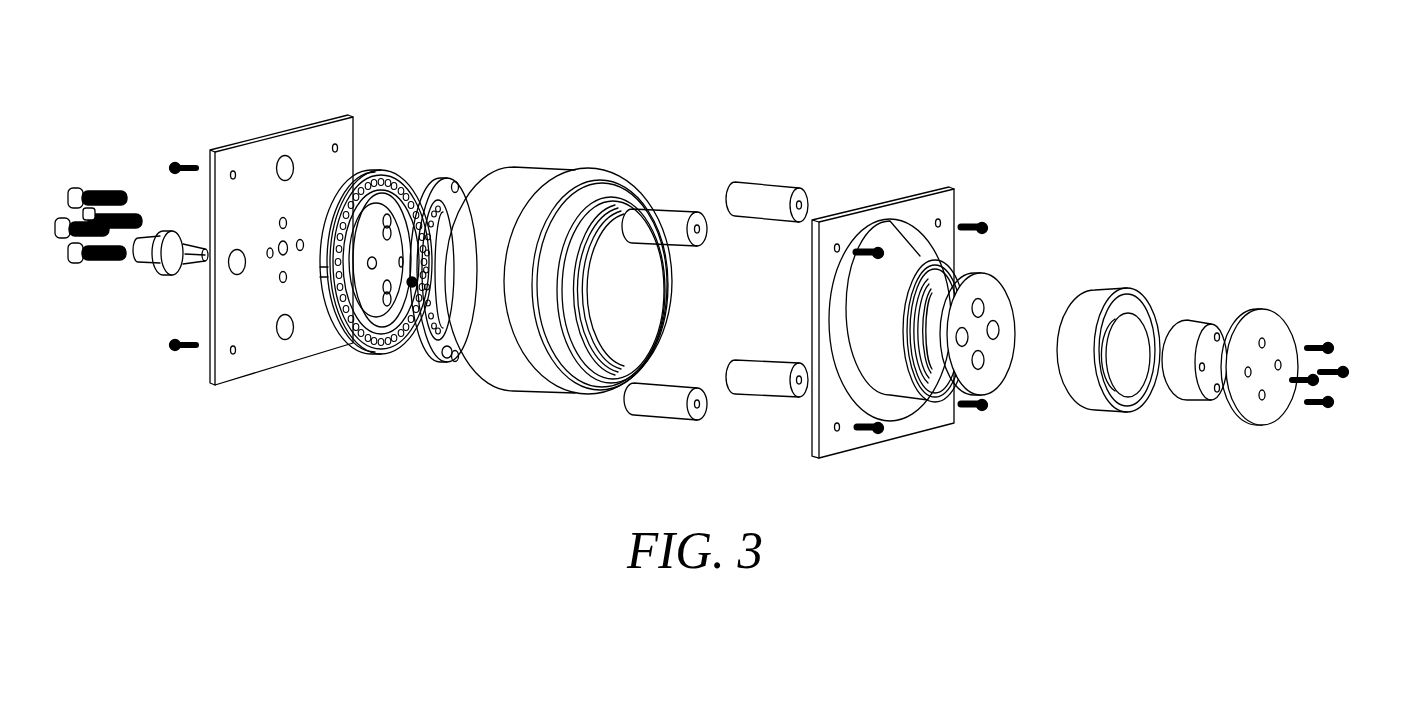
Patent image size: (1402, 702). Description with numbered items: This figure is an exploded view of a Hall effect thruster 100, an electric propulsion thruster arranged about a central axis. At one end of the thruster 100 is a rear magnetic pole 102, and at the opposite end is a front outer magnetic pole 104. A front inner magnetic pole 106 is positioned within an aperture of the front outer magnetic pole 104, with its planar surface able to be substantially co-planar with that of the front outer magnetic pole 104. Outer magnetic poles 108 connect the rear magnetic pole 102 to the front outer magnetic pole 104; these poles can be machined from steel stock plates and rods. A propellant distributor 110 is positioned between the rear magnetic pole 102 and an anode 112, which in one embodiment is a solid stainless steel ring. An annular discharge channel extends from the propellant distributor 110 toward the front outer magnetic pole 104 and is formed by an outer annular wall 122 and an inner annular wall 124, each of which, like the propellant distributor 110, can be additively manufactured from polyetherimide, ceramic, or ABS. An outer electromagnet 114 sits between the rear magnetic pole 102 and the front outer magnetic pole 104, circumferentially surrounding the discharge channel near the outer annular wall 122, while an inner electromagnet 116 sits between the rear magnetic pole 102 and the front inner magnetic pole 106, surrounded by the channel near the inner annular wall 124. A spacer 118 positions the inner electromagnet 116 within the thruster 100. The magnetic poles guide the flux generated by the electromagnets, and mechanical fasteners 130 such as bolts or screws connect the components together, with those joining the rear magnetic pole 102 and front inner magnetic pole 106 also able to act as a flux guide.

The Hall effect thruster 100 is at (1008, 106).
The rear magnetic pole 102 is at (280, 132).
The front outer magnetic pole 104 is at (951, 191).
The front inner magnetic pole 106 is at (1270, 313).
The outer magnetic poles 108 is at (655, 217).
The propellant distributor 110 is at (388, 172).
The anode 112 is at (460, 180).
The outer electromagnet 114 is at (554, 270).
The inner electromagnet 116 is at (1132, 310).
The spacer 118 is at (997, 304).
The outer annular wall 122 is at (583, 197).
The inner annular wall 124 is at (910, 273).
The mechanical fasteners 130 is at (114, 184).